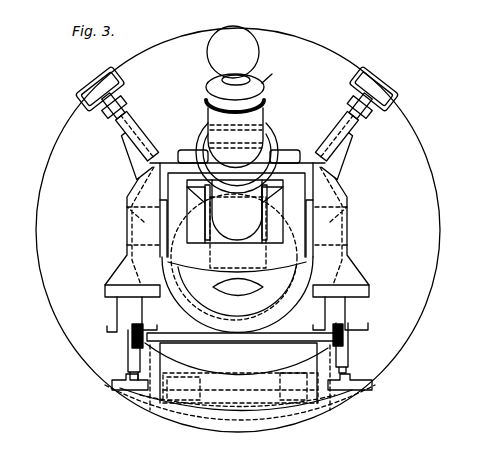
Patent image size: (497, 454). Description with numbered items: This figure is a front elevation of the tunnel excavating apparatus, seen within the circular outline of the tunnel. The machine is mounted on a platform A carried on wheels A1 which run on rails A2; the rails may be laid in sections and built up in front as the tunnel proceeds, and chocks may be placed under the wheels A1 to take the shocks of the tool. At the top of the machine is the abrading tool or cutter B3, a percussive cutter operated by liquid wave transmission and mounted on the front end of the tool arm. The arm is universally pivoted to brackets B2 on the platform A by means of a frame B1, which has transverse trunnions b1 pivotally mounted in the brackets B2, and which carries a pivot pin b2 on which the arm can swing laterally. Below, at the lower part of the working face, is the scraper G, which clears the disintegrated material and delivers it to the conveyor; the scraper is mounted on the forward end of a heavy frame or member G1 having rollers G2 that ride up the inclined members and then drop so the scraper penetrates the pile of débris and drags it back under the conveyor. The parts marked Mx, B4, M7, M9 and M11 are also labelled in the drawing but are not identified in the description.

The abrading tool or cutter B3 is at (235, 69).
The swing arm with head Mx is at (128, 107).
The brackets B2 is at (136, 190).
The transverse trunnions b1 is at (130, 217).
The frame B1 is at (182, 256).
The platform A is at (127, 312).
The bowl B4 is at (237, 294).
The pivot pin b2 is at (258, 289).
The heavy frame or member G1 is at (334, 323).
The rollers G2 is at (133, 348).
The wheels A1 is at (114, 374).
The rails A2 is at (128, 393).
The lower carriage M11 is at (240, 413).
The scraper G is at (327, 400).
The band guide M7 is at (287, 405).
The band track M9 is at (134, 410).